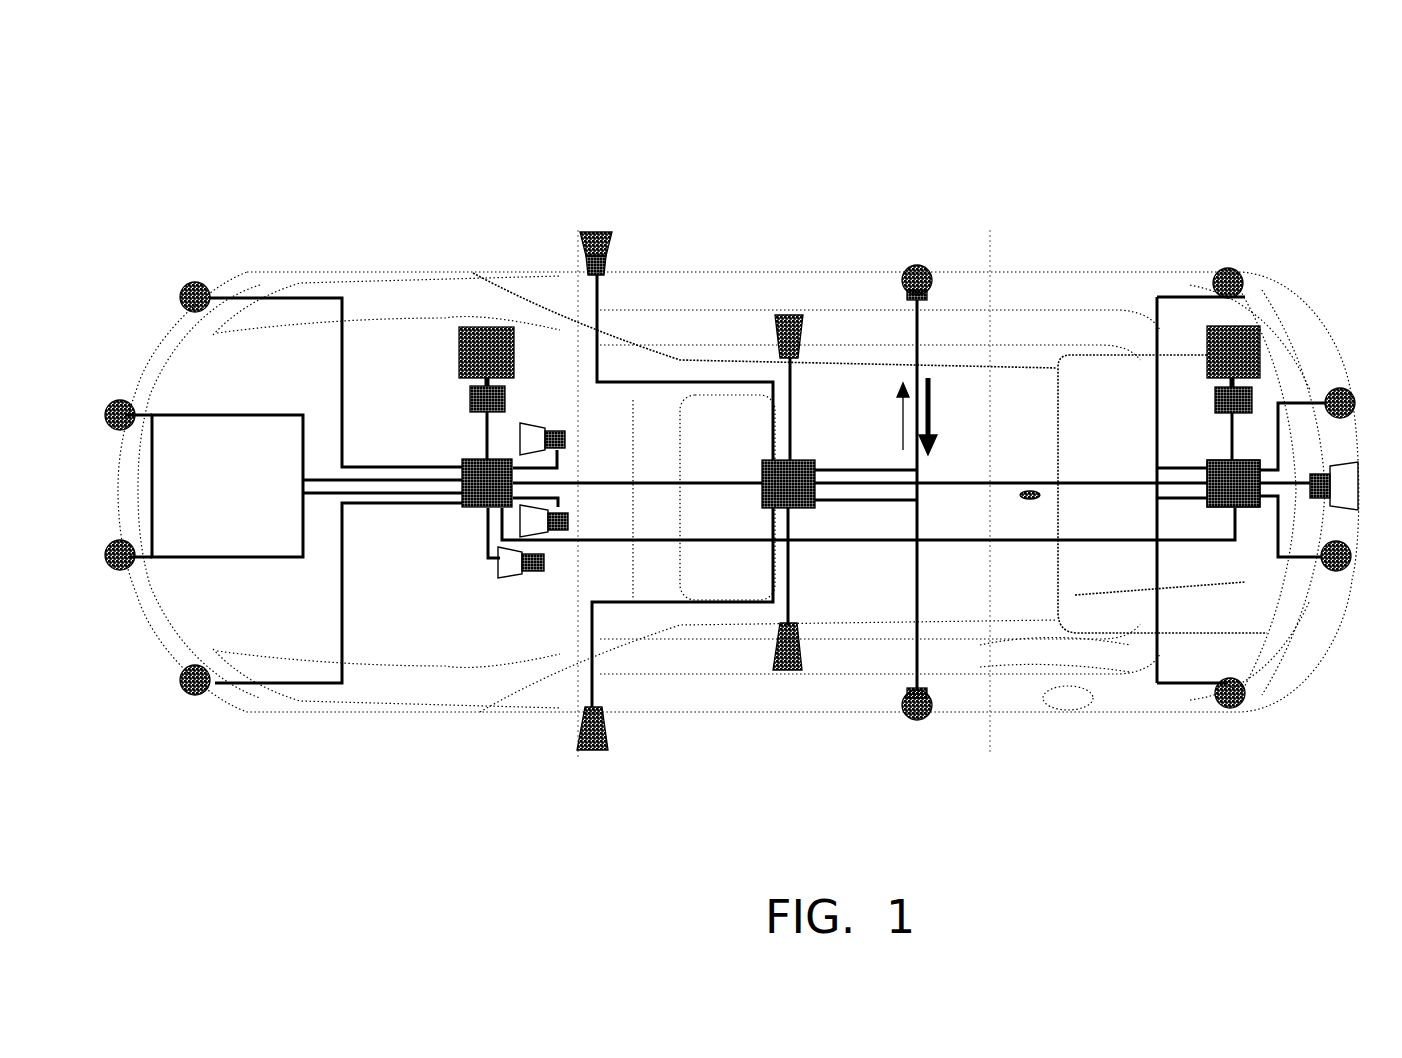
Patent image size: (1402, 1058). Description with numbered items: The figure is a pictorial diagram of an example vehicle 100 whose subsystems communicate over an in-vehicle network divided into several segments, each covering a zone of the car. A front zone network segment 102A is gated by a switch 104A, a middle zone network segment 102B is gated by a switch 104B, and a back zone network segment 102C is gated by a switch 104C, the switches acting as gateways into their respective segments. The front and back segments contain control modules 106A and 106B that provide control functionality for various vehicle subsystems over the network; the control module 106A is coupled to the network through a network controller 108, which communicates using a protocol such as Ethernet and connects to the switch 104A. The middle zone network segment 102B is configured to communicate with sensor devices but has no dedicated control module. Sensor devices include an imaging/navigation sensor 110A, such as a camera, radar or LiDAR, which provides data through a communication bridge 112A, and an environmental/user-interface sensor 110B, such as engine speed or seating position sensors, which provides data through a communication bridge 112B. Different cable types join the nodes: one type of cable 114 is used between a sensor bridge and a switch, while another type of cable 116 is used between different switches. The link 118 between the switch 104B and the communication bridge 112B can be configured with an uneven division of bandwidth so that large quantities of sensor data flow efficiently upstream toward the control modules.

The vehicle 100 is at (911, 95).
The front zone network segment 102A is at (428, 757).
The middle zone network segment 102B is at (805, 756).
The back zone network segment 102C is at (1175, 756).
The switch 104A is at (470, 456).
The switch 104B is at (803, 458).
The switch 104C is at (1207, 463).
The control module 106A is at (460, 352).
The control module 106B is at (1262, 340).
The network controller 108 is at (470, 395).
The imaging/navigation sensor 110A is at (593, 232).
The environmental/user-interface sensor 110B is at (925, 267).
The communication bridge 112A is at (607, 263).
The communication bridge 112B is at (908, 290).
The cable 114 is at (229, 556).
The cable 116 is at (1028, 492).
The link 118 is at (915, 337).